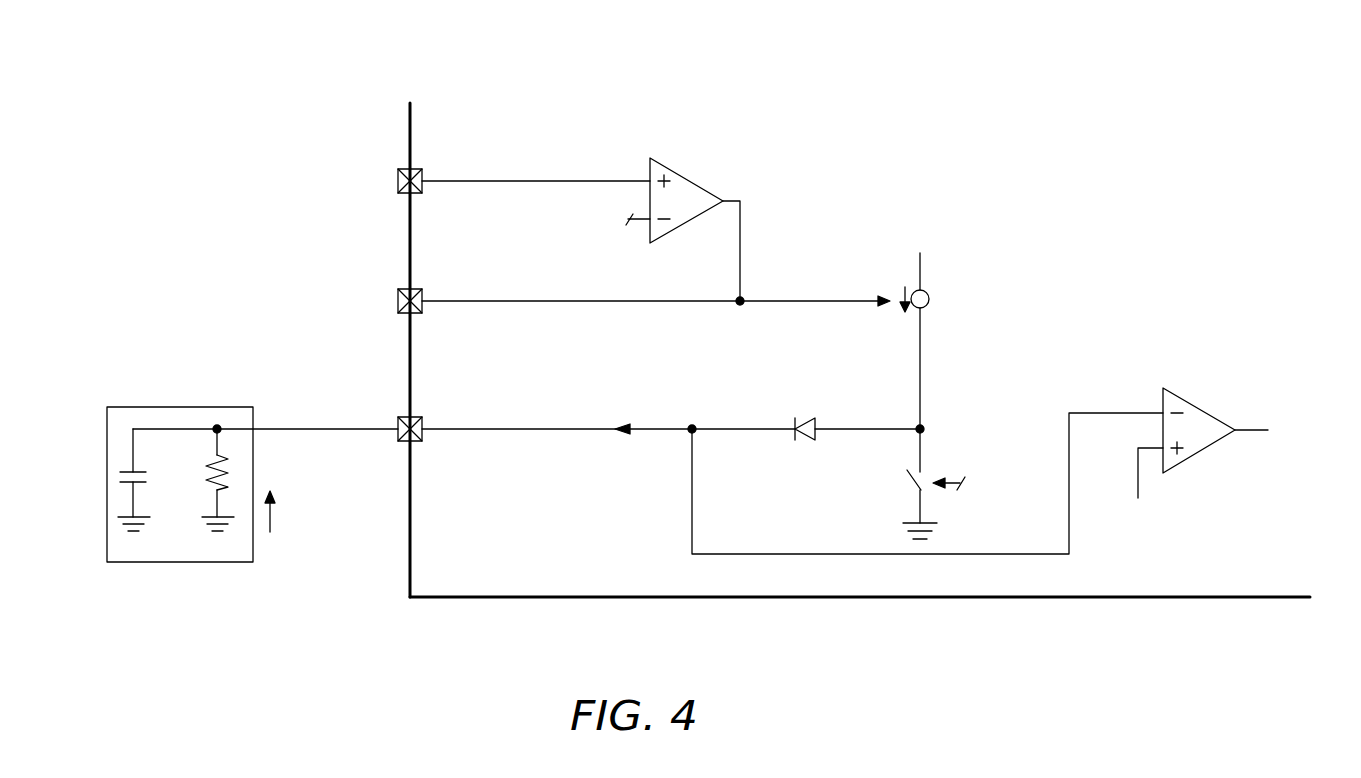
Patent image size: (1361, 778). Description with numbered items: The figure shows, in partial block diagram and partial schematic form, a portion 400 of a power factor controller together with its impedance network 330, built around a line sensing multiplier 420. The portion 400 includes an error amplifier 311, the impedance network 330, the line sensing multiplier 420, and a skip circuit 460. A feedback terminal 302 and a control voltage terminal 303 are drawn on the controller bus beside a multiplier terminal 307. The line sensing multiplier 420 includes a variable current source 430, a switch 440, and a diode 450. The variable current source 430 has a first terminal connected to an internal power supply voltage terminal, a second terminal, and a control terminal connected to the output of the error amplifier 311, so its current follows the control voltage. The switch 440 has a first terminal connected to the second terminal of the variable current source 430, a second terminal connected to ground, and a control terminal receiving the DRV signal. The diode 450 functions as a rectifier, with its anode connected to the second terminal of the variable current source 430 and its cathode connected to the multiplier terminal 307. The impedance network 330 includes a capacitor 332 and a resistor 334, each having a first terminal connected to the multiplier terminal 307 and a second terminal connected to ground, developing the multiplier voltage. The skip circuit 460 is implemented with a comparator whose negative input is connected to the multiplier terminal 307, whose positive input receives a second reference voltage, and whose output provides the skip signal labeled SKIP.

The portion 400 is at (226, 103).
The feedback terminal 302 is at (397, 188).
The control voltage terminal 303 is at (398, 309).
The multiplier terminal 307 is at (398, 437).
The error amplifier 311 is at (680, 172).
The impedance network 330 is at (200, 407).
The capacitor 332 is at (162, 459).
The resistor 334 is at (230, 469).
The line sensing multiplier 420 is at (995, 235).
The variable current source 430 is at (913, 291).
The switch 440 is at (907, 483).
The diode 450 is at (812, 420).
The skip circuit 460 is at (1183, 395).